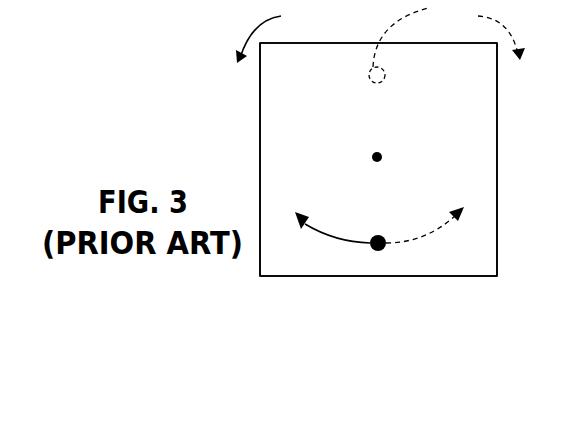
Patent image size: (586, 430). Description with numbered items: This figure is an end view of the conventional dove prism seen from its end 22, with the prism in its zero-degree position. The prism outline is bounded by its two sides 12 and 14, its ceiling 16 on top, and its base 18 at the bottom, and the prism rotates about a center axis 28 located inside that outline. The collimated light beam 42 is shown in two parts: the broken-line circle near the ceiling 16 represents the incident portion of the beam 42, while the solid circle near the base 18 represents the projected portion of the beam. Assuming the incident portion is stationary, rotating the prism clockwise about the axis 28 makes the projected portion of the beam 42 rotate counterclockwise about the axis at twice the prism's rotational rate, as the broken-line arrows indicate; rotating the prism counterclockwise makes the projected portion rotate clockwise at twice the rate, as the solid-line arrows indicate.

The end 22 is at (280, 138).
The side 12 is at (260, 160).
The side 14 is at (497, 193).
The ceiling 16 is at (365, 43).
The base 18 is at (462, 277).
The center axis 28 is at (383, 156).
The collimated light beam 42 is at (412, 305).